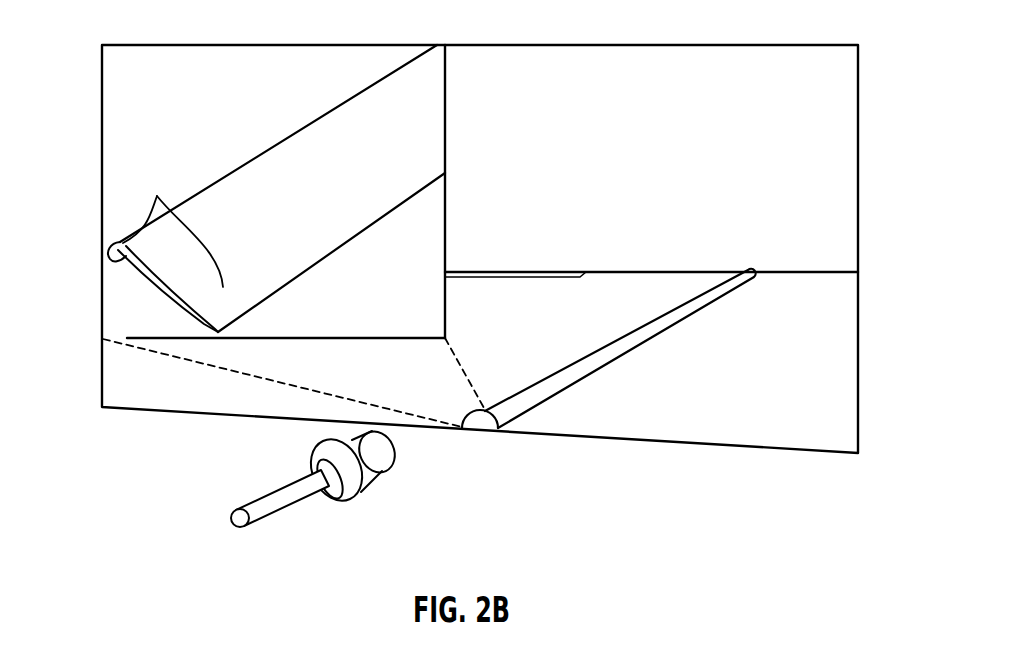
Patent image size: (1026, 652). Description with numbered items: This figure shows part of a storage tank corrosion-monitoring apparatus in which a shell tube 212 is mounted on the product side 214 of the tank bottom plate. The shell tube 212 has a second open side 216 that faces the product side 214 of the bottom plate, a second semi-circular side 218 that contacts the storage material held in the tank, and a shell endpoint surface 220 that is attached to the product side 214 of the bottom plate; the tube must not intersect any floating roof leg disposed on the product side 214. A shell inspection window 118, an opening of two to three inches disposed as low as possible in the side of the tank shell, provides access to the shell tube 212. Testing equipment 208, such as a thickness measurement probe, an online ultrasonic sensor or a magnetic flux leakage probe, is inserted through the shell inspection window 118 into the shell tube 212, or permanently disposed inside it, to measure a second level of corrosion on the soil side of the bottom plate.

The shell inspection window 118 is at (479, 426).
The testing equipment 208 is at (407, 470).
The shell tube 212 is at (607, 345).
The product side of the bottom plate 214 is at (835, 333).
The second open side 216 is at (156, 276).
The second semi-circular side 218 is at (173, 227).
The shell endpoint surface 220 is at (117, 259).